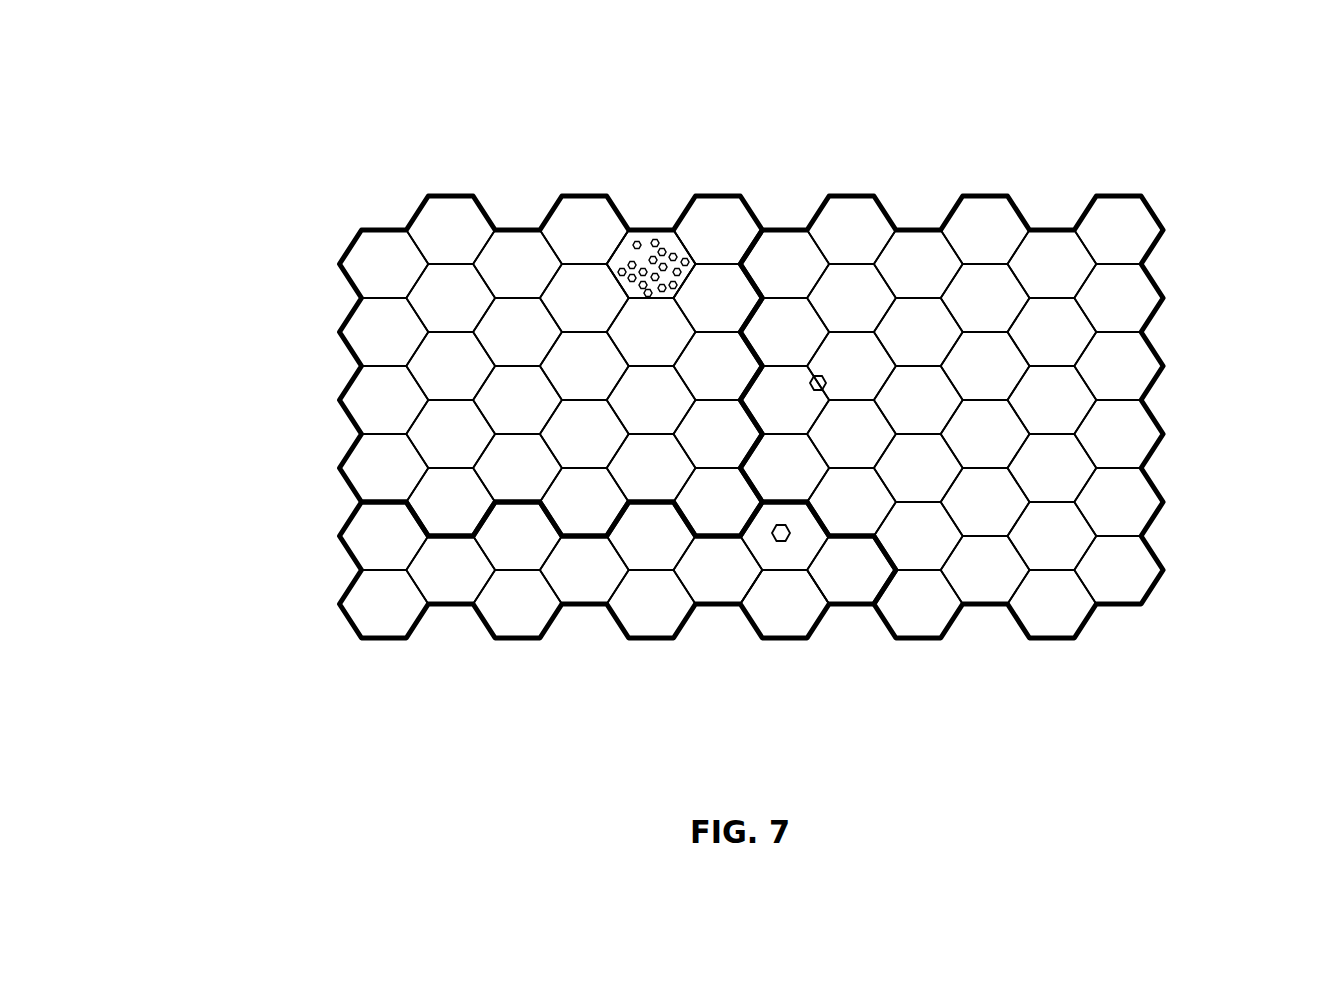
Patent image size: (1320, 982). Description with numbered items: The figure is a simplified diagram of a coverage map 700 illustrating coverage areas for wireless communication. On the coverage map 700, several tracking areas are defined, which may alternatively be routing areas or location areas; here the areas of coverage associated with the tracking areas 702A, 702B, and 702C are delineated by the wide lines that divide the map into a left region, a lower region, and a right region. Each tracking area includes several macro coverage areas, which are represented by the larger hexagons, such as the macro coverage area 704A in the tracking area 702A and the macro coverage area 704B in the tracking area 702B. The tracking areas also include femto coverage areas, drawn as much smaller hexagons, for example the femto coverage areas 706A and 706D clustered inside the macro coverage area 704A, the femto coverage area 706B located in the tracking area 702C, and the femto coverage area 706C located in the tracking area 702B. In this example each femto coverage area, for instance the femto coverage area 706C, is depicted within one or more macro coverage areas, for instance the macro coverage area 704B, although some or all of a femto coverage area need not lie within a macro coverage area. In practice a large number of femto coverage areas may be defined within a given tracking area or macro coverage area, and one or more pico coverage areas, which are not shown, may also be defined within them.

The coverage map 700 is at (752, 34).
The tracking area 702A is at (338, 264).
The tracking area 702B is at (408, 640).
The tracking area 702C is at (1162, 432).
The macro coverage area 704A is at (613, 255).
The macro coverage area 704B is at (787, 572).
The femto coverage area 706A is at (642, 230).
The femto coverage area 706B is at (822, 376).
The femto coverage area 706C is at (784, 542).
The femto coverage area 706D is at (658, 230).